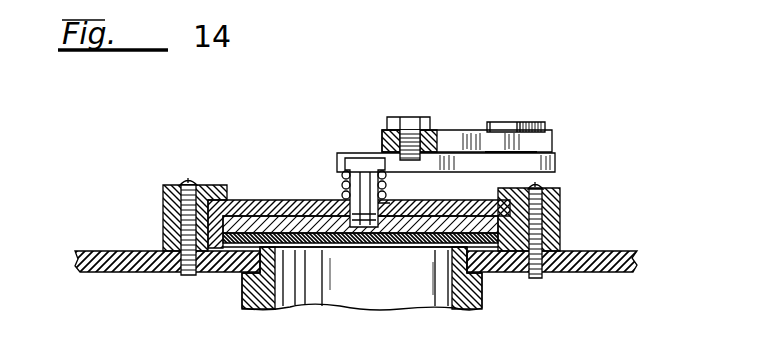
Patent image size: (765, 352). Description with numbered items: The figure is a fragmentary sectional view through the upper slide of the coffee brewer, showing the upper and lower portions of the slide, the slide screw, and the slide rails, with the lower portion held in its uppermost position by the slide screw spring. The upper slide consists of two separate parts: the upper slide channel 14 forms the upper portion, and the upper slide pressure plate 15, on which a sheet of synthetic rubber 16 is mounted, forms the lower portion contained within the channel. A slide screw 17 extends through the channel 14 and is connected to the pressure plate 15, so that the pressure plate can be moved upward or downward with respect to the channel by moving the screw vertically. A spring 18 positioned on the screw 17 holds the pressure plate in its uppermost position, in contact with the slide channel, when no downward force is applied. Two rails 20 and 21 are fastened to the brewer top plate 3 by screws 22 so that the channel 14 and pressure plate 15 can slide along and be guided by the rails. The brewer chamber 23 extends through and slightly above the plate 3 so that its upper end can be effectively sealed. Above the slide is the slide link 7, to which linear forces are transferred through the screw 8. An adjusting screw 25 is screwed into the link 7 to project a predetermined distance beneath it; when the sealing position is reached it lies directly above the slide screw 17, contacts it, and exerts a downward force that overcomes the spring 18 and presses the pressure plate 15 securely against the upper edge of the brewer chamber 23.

The brewer top plate 3 is at (603, 260).
The slide link 7 is at (472, 133).
The screw 8 is at (530, 120).
The upper slide channel 14 is at (288, 212).
The upper slide pressure plate 15 is at (342, 192).
The sheet of synthetic rubber 16 is at (268, 230).
The slide screw 17 is at (372, 183).
The spring 18 is at (387, 200).
The rail 20 is at (165, 203).
The rail 21 is at (562, 203).
The screws 22 is at (190, 180).
The brewer chamber 23 is at (483, 297).
The adjusting screw 25 is at (427, 118).